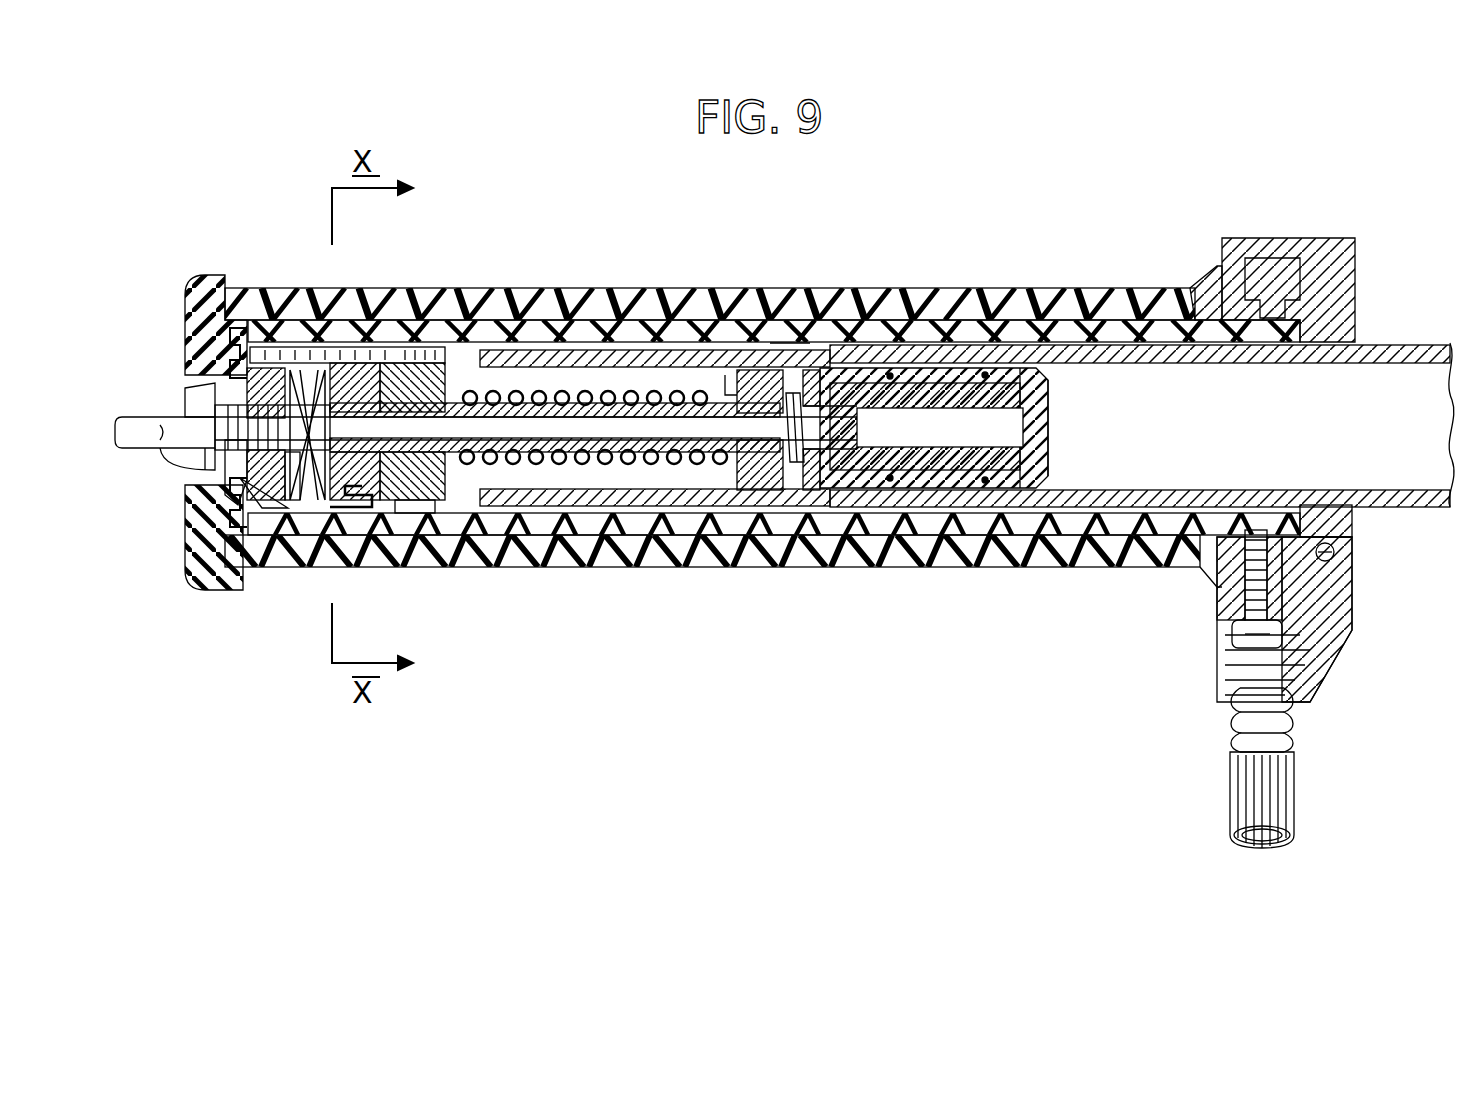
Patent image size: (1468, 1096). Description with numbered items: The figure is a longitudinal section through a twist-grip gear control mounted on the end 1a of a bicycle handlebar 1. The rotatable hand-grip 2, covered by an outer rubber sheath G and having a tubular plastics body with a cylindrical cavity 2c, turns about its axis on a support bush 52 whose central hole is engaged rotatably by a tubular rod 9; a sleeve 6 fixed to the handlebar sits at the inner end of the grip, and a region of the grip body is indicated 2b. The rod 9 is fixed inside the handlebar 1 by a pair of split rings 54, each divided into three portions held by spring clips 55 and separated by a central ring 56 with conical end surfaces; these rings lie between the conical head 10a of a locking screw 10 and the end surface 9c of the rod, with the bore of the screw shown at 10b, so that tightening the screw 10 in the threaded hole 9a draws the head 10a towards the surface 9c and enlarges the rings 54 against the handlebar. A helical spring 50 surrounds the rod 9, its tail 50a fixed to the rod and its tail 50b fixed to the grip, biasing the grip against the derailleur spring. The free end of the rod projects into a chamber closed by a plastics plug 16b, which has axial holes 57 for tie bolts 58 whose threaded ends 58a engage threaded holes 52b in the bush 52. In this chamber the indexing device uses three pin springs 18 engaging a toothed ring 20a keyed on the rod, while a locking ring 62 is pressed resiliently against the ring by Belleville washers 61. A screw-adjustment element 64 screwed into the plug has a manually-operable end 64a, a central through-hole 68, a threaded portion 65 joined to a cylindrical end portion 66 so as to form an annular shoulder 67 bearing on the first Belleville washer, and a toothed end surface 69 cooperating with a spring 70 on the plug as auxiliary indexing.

The bicycle handlebar 1 is at (1436, 327).
The end of the handlebar 1a is at (719, 318).
The rotatable hand-grip 2 is at (603, 283).
The housing flange 2b is at (1214, 285).
The cylindrical cavity 2c is at (701, 533).
The sleeve 6 is at (1306, 232).
The tubular rod 9 is at (645, 468).
The threaded hole 9a is at (838, 368).
The end surface 9c is at (838, 492).
The locking screw 10 is at (963, 363).
The conical head 10a is at (1050, 463).
The bore 10b is at (857, 427).
The plug 16b is at (240, 333).
The pin spring 18 is at (352, 522).
The toothed ring 20a is at (402, 515).
The helical spring 50 is at (594, 468).
The spring tail 50a is at (757, 348).
The spring tail 50b is at (474, 508).
The support bush 52 is at (455, 362).
The threaded holes 52b is at (402, 347).
The split rings 54 is at (890, 360).
The spring clips 55 is at (986, 488).
The central ring 56 is at (895, 505).
The axial holes 57 is at (262, 366).
The tie bolts 58 is at (292, 365).
The threaded ends 58a is at (440, 348).
The Belleville washers 61 is at (348, 362).
The locking ring 62 is at (292, 502).
The screw-adjustment element 64 is at (155, 352).
The manually-operable end 64a is at (165, 452).
The threaded portion 65 is at (172, 406).
The circular cylindrical end portion 66 is at (318, 502).
The annular shoulder 67 is at (208, 400).
The central through-hole 68 is at (158, 458).
The toothed end surface 69 is at (205, 455).
The spring 70 is at (238, 452).
The outer rubber sheath G is at (788, 297).